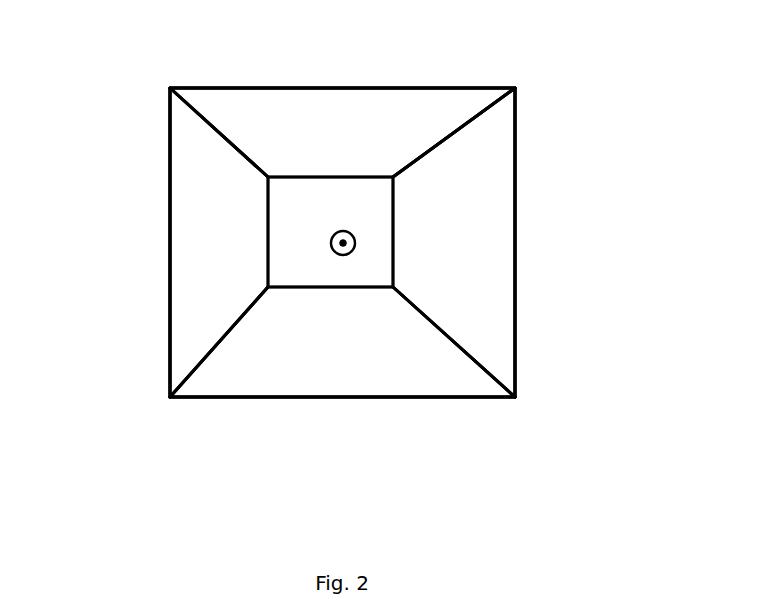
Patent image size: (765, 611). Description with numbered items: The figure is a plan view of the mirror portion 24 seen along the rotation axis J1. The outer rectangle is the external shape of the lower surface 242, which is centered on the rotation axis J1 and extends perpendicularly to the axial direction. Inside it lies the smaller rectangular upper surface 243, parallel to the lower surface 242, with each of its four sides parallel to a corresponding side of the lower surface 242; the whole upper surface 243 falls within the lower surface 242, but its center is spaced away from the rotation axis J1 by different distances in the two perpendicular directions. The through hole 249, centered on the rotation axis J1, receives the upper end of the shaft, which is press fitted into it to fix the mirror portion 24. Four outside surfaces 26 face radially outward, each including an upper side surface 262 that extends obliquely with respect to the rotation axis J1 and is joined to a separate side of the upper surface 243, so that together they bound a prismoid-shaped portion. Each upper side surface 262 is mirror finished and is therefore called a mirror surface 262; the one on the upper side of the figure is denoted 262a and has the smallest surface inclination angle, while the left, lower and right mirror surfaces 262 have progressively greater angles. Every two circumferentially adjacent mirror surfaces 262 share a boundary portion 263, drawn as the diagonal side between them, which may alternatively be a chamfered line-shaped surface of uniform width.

The mirror portion 24 is at (210, 42).
The outside surface 26 is at (92, 192).
The upper side surface (mirror surface) 262 is at (203, 217).
The mirror surface on upper side 262a is at (398, 107).
The boundary portion 263 is at (218, 132).
The lower surface 242 is at (347, 107).
The upper surface 243 is at (330, 267).
The through hole 249 is at (343, 230).
The rotation axis J1 is at (331, 237).